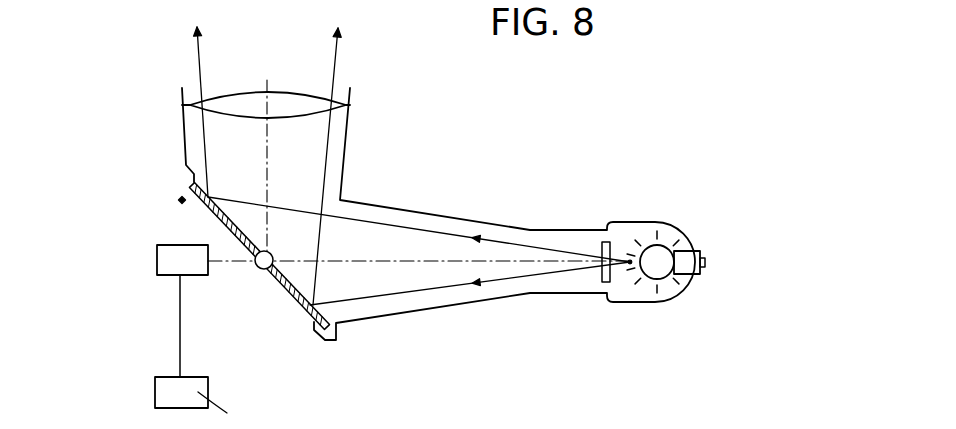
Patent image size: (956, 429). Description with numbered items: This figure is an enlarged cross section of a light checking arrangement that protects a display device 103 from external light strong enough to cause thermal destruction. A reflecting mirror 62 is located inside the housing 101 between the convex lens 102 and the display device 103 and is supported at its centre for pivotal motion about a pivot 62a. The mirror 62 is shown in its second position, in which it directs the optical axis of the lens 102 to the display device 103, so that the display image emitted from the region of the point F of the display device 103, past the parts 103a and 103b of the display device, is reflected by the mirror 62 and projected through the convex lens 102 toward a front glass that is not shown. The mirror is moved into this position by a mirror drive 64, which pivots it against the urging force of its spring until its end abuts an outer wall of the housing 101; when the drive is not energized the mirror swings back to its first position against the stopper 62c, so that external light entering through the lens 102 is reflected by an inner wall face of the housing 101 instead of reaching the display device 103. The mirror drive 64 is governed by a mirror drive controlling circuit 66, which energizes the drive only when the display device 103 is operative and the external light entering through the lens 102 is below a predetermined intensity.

The reflecting mirror 62 is at (298, 304).
The mirror pivot 62a is at (262, 268).
The stopper 62c is at (180, 198).
The mirror drive 64 is at (157, 262).
The mirror drive controlling circuit 66 is at (155, 395).
The housing 101 is at (458, 305).
The convex lens 102 is at (315, 98).
The display device 103 is at (660, 223).
The filter 103a is at (603, 248).
The lamp base 103b is at (686, 256).
The focal point / filament F is at (632, 257).